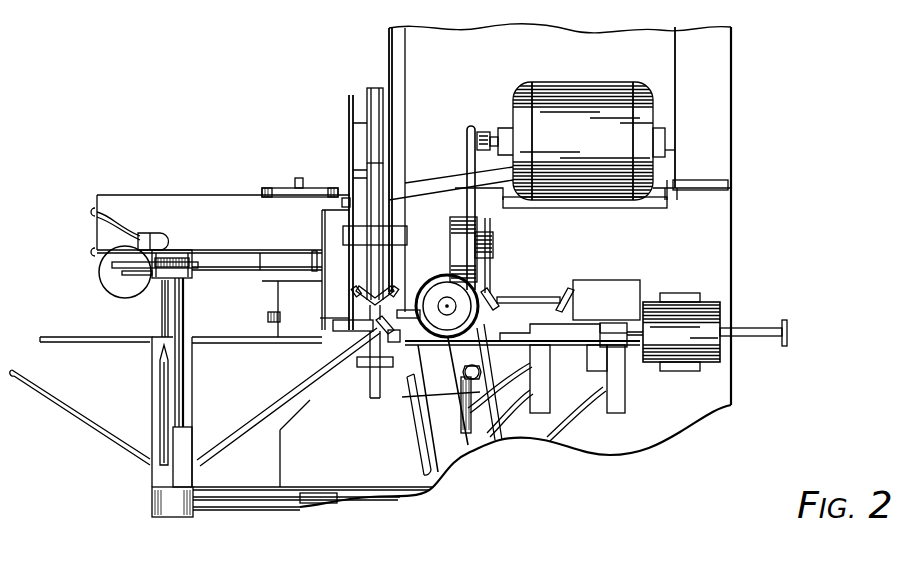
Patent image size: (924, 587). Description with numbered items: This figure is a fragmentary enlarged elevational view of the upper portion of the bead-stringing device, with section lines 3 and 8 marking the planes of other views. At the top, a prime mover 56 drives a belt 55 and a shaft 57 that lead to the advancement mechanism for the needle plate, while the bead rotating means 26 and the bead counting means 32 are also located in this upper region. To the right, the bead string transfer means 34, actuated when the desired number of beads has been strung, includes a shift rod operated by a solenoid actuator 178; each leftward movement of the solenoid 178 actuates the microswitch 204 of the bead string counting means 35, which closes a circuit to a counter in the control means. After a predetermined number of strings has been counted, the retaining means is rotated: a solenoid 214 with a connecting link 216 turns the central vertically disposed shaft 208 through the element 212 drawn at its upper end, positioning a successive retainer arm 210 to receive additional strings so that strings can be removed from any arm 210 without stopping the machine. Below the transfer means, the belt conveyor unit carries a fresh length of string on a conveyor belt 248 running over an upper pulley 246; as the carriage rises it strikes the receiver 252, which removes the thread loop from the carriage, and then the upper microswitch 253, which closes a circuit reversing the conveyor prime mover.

The section line 3- 3 is at (373, 88).
The section line 8- 8 is at (349, 96).
The bead rotating means 26 is at (265, 190).
The prime mover 56 is at (618, 127).
The belt 55 is at (467, 205).
The shaft 57 is at (494, 250).
The solenoid actuator 178 is at (705, 318).
The bead string counting means 35 is at (620, 398).
The microswitch 204 is at (592, 355).
The bead counting means 32 is at (388, 300).
The upper pulley 246 is at (438, 294).
The bead string transfer means 34 is at (488, 332).
The upper microswitch 253 is at (420, 415).
The receiver 252 is at (420, 432).
The conveyor belt 248 is at (497, 427).
The solenoid 214 is at (120, 280).
The connecting link 216 is at (112, 265).
The clamp 212 is at (180, 258).
The shaft 208 is at (184, 312).
The retainer arm 210 is at (97, 423).